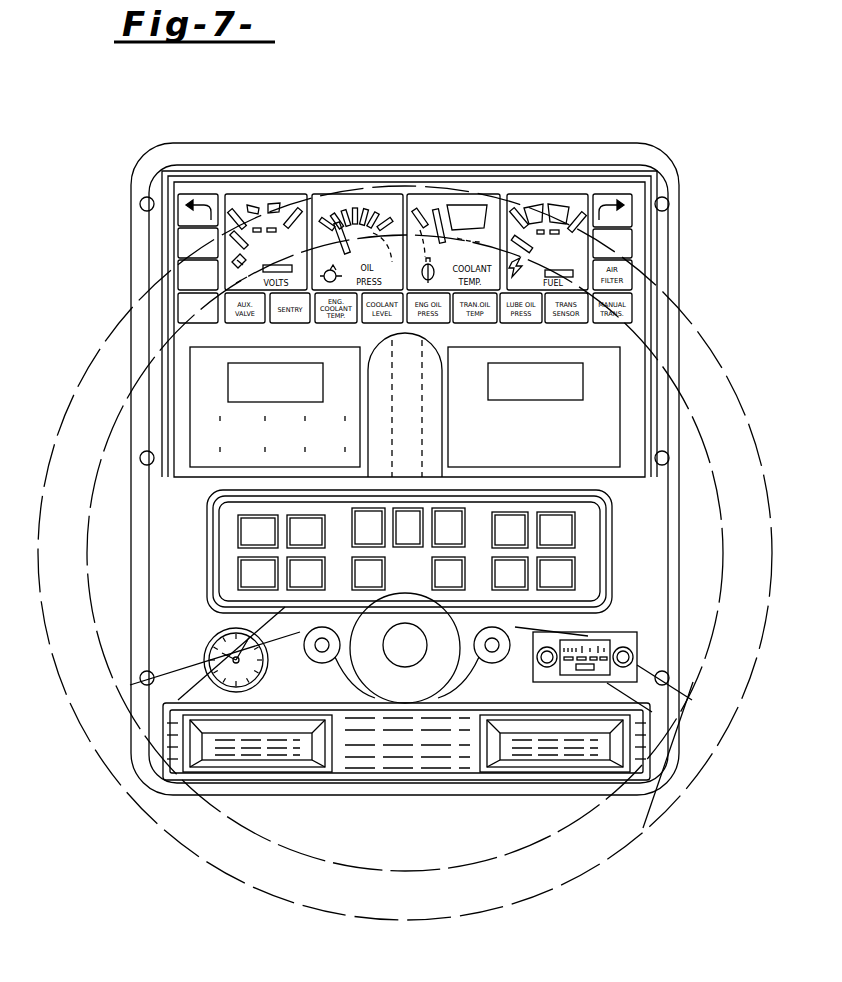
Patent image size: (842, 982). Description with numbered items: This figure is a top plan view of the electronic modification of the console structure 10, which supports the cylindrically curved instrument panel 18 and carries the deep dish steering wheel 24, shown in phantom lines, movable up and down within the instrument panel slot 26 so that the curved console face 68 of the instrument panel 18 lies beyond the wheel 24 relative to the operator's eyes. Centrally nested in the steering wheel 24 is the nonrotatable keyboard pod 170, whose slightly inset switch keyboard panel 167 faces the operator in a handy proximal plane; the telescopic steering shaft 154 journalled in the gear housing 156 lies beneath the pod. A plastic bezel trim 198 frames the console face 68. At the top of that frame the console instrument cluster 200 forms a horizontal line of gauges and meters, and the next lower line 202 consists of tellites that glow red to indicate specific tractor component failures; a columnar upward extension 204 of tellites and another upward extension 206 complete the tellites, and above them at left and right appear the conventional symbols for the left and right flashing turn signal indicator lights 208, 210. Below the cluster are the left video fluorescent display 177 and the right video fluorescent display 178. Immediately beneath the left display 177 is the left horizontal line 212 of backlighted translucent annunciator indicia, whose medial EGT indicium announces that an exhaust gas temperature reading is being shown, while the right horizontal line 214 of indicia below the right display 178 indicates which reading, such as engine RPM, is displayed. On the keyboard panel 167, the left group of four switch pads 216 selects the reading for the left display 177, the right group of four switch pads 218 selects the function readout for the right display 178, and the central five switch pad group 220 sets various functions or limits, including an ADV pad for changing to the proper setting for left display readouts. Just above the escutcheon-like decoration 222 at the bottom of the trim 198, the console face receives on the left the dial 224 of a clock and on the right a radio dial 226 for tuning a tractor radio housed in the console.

The console structure 10 is at (362, 150).
The instrument panel 18 is at (445, 527).
The steering wheel 24 is at (433, 860).
The instrument panel slot 26 is at (368, 405).
The console face 68 is at (622, 335).
The telescopic steering shaft 154 is at (406, 764).
The gear housing 156 is at (450, 678).
The switch keyboard panel 167 is at (233, 552).
The keyboard pod 170 is at (612, 548).
The left video fluorescent display 177 is at (228, 388).
The right video fluorescent display 178 is at (583, 380).
The bezel trim 198 is at (663, 258).
The console instrument cluster 200 is at (521, 190).
The line of tellites 202 is at (178, 303).
The columnar upward extension of tellites 204 is at (178, 252).
The upward extension of tellites 206 is at (633, 243).
The left turn signal indicator light 208 is at (178, 194).
The right turn signal indicator light 210 is at (620, 203).
The left horizontal line of annunciator indicia 212 is at (355, 440).
The right horizontal line of annunciator indicia 214 is at (613, 432).
The group of four switch pads 216 is at (328, 520).
The right group of four switch pads 218 is at (497, 514).
The five switch pad group 220 is at (425, 558).
The escutcheon-like decoration 222 is at (297, 748).
The clock dial 224 is at (265, 678).
The radio dial 226 is at (588, 655).